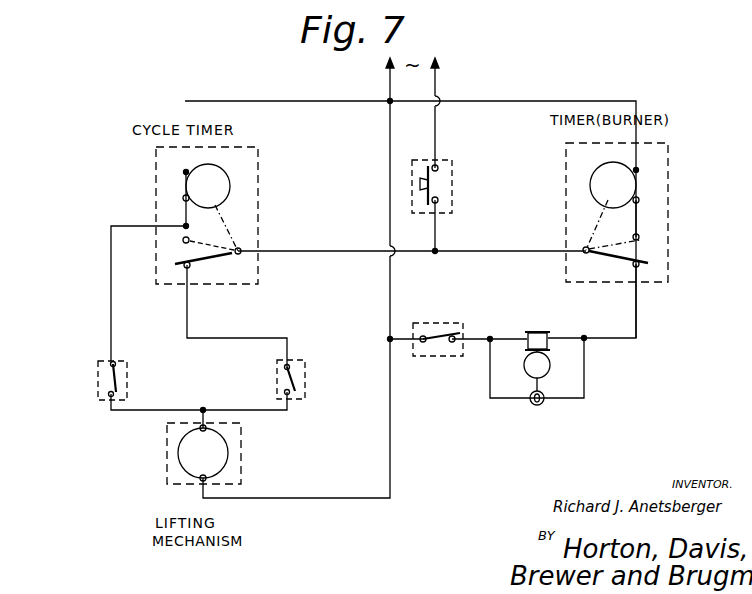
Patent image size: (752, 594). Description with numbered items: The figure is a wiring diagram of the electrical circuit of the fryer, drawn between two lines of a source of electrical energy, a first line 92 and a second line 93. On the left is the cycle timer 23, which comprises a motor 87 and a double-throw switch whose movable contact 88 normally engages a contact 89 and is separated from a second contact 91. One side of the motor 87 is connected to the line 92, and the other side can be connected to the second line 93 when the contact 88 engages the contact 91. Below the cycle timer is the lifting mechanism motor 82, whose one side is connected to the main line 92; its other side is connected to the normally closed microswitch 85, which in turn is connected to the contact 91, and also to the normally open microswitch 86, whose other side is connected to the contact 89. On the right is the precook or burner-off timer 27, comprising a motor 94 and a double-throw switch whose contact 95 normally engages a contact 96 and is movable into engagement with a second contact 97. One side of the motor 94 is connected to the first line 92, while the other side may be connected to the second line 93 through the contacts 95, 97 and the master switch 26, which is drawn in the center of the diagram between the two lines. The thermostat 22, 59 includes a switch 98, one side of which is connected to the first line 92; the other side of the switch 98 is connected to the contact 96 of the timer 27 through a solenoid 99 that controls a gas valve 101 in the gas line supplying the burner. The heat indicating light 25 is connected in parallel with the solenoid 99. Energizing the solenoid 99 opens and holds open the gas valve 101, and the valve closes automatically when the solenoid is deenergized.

The cycle timer 23 is at (156, 190).
The motor 87 is at (230, 170).
The second contact 91 is at (193, 243).
The contact 88 is at (222, 258).
The contact 89 is at (184, 269).
The normally closed microswitch 85 is at (98, 382).
The normally open microswitch 86 is at (300, 374).
The motor 82 is at (228, 451).
The line 92 is at (389, 82).
The second line 93 is at (437, 84).
The master switch 26 is at (440, 183).
The switch 98 is at (432, 336).
The thermostat 22 is at (437, 357).
The thermostat 59 is at (454, 405).
The precook or burner-off timer 27 is at (668, 197).
The motor 94 is at (607, 165).
The second contact 97 is at (640, 238).
The contact 95 is at (612, 258).
The contact 96 is at (648, 266).
The solenoid 99 is at (540, 330).
The gas valve 101 is at (550, 363).
The heat indicating light 25 is at (538, 406).